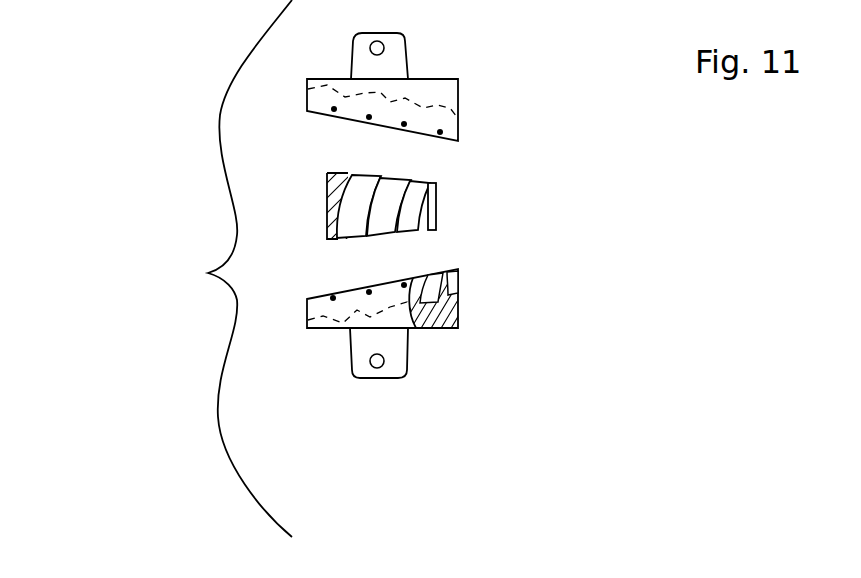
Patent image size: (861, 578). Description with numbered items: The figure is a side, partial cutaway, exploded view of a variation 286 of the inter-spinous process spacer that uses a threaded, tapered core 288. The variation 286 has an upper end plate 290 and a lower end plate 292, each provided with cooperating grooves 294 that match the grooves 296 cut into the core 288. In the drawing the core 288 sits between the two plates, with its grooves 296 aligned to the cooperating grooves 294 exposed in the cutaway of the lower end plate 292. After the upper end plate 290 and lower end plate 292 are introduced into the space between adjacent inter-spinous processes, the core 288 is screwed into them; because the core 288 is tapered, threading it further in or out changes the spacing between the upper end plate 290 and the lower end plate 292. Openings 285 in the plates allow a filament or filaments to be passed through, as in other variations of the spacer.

The openings 285 is at (334, 111).
The variation of the inter-spinous process spacer 286 is at (203, 243).
The threaded, tapered core 288 is at (437, 205).
The upper end plate 290 is at (455, 78).
The lower end plate 292 is at (333, 330).
The cooperating grooves 294 is at (440, 285).
The grooves 296 is at (422, 178).